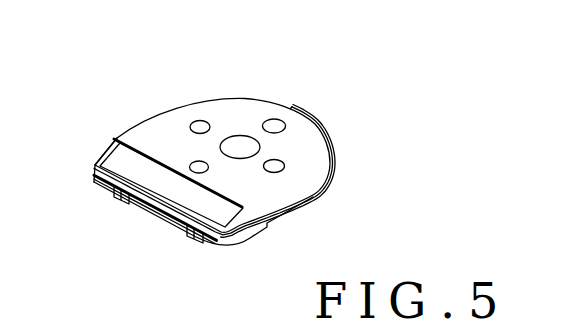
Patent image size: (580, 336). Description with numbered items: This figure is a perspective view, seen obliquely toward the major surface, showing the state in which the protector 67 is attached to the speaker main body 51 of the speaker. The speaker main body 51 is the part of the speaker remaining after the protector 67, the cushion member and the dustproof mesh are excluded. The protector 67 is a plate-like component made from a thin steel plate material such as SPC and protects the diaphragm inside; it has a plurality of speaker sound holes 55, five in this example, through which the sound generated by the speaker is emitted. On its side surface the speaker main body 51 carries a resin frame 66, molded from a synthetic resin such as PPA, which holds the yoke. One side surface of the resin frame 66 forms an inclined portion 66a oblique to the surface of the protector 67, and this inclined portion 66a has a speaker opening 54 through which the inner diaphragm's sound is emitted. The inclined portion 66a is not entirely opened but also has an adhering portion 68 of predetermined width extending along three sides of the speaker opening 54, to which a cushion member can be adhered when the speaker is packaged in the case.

The speaker main body 51 is at (187, 82).
The speaker opening 54 is at (178, 186).
The speaker sound holes 55 is at (200, 161).
The resin frame 66 is at (267, 227).
The inclined portion 66a is at (100, 164).
The protector 67 is at (313, 148).
The adhering portion 68 is at (96, 165).